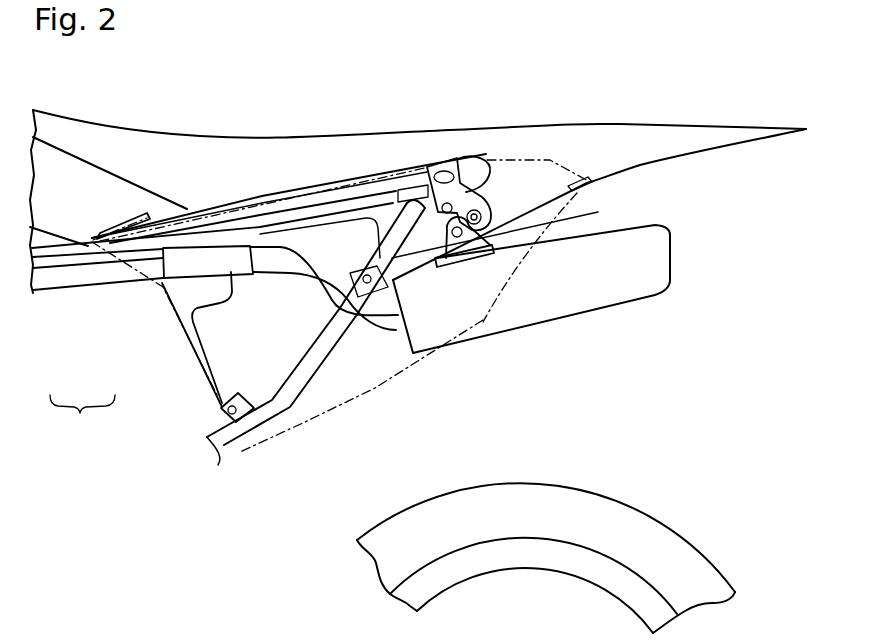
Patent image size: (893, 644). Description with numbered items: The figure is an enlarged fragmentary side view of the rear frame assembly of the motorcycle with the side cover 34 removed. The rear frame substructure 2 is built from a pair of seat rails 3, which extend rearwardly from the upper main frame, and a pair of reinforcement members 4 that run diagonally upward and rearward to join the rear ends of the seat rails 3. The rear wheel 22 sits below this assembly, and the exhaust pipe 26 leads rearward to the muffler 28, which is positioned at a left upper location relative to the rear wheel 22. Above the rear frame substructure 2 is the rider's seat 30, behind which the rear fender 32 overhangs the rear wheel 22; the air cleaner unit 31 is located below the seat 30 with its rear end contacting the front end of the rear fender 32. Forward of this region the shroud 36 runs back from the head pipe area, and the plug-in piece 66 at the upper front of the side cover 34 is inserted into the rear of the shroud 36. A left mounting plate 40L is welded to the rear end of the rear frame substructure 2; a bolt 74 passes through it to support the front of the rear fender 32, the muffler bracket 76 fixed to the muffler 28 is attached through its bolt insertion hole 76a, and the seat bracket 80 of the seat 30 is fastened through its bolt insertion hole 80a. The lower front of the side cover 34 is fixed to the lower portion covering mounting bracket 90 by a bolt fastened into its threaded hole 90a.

The rear frame substructure 2 is at (82, 419).
The seat rails 3 is at (58, 253).
The reinforcement members 4 is at (210, 428).
The rear wheel 22 is at (597, 508).
The exhaust pipe 26 is at (132, 270).
The muffler 28 is at (562, 303).
The rider's seat 30 is at (245, 150).
The air cleaner unit 31 is at (270, 375).
The rear fender 32 is at (607, 137).
The side cover 34 is at (372, 386).
The shroud 36 is at (67, 180).
The left mounting plate 40L is at (479, 162).
The plug-in piece 66 is at (130, 207).
The bolt 74 is at (510, 249).
The muffler bracket 76 is at (456, 250).
The bolt insertion hole 76a is at (477, 225).
The seat bracket 80 is at (452, 200).
The bolt insertion hole 80a is at (430, 168).
The lower portion covering mounting bracket 90 is at (215, 404).
The threaded hole 90a is at (228, 443).